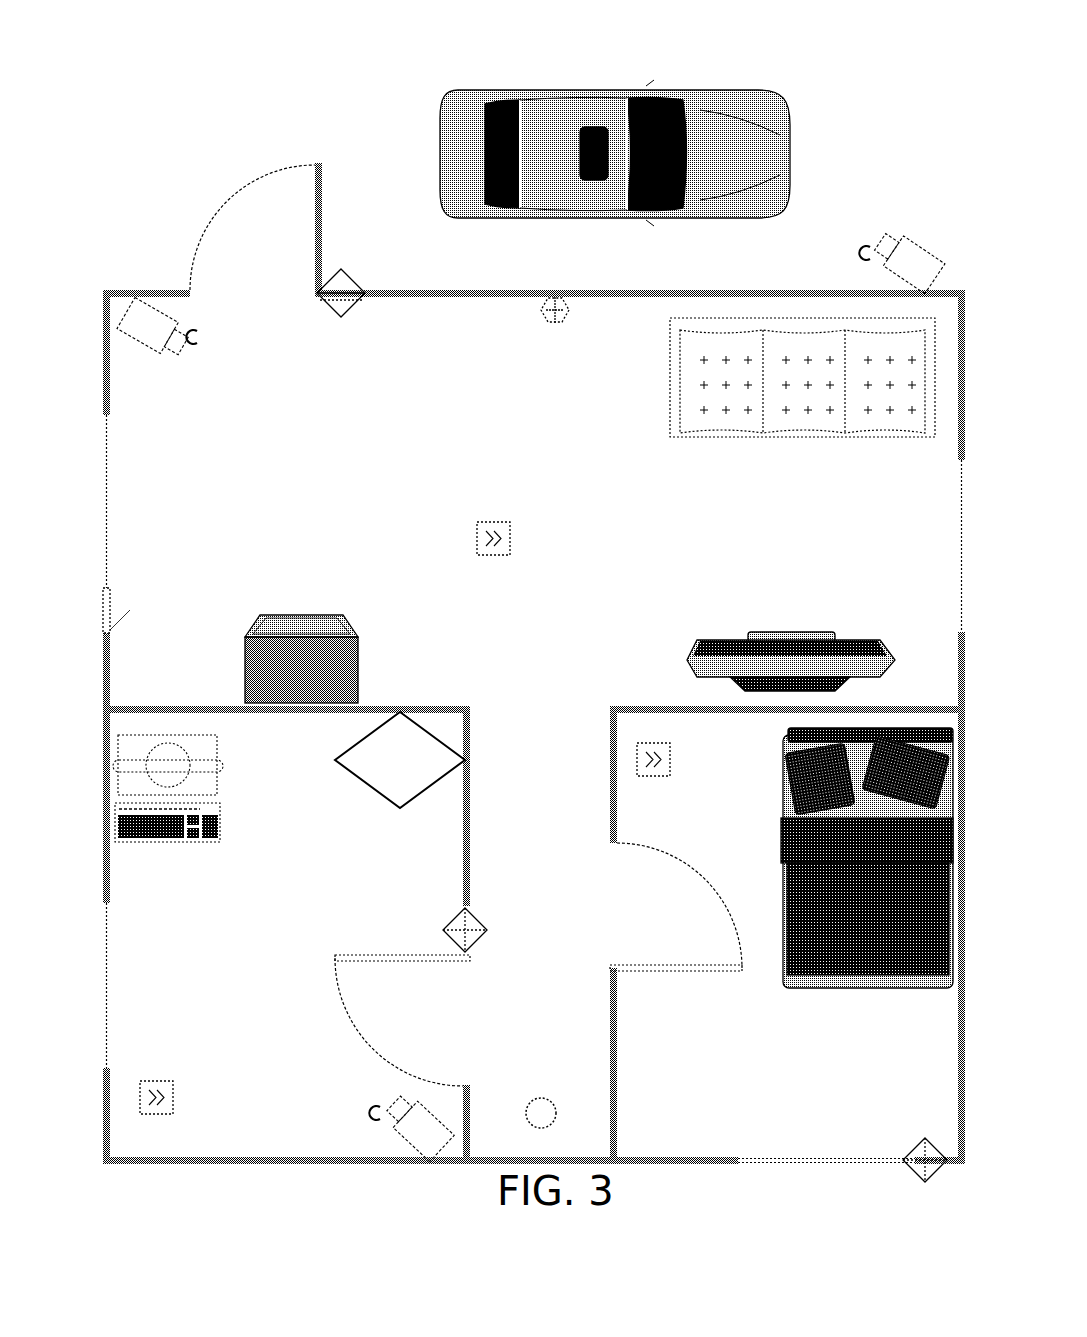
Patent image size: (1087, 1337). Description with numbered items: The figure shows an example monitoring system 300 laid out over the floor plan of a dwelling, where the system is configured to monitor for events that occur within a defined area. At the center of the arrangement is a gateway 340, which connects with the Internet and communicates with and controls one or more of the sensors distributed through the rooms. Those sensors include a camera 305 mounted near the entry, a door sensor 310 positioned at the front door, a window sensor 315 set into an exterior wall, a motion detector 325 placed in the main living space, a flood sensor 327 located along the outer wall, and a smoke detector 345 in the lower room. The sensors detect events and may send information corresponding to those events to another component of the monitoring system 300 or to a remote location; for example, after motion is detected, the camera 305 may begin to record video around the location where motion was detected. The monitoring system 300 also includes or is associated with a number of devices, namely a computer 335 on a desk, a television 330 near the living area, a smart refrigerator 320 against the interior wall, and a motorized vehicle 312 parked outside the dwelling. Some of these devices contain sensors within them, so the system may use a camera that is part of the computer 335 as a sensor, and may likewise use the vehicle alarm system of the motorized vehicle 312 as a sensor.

The monitoring system 300 is at (115, 53).
The camera 305 is at (190, 364).
The door sensor 310 is at (353, 312).
The motorized vehicle 312 is at (437, 126).
The window sensor 315 is at (108, 588).
The smart refrigerator 320 is at (328, 615).
The motion detector 325 is at (510, 540).
The flood sensor 327 is at (548, 302).
The television 330 is at (682, 657).
The computer 335 is at (222, 785).
The gateway 340 is at (465, 766).
The smoke detector 345 is at (544, 1098).